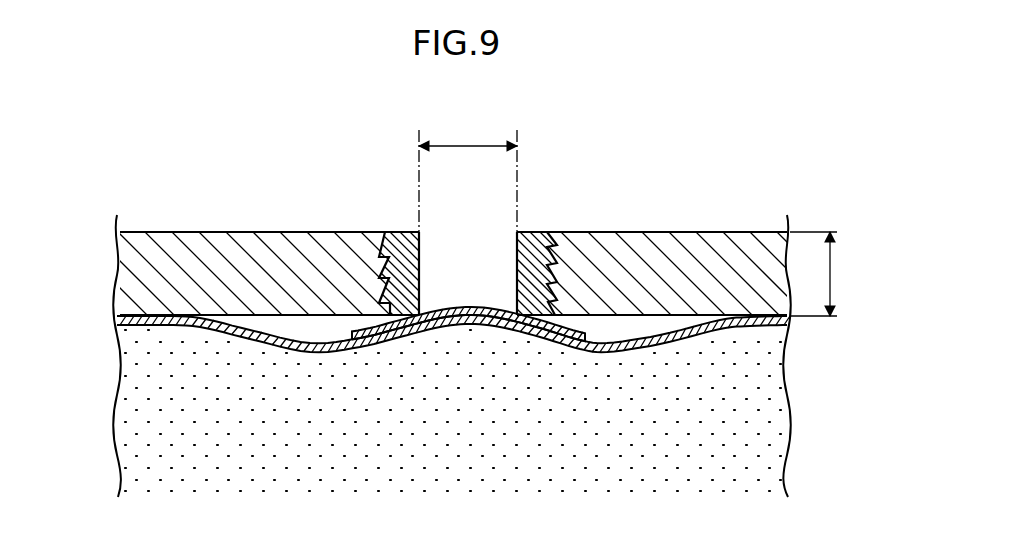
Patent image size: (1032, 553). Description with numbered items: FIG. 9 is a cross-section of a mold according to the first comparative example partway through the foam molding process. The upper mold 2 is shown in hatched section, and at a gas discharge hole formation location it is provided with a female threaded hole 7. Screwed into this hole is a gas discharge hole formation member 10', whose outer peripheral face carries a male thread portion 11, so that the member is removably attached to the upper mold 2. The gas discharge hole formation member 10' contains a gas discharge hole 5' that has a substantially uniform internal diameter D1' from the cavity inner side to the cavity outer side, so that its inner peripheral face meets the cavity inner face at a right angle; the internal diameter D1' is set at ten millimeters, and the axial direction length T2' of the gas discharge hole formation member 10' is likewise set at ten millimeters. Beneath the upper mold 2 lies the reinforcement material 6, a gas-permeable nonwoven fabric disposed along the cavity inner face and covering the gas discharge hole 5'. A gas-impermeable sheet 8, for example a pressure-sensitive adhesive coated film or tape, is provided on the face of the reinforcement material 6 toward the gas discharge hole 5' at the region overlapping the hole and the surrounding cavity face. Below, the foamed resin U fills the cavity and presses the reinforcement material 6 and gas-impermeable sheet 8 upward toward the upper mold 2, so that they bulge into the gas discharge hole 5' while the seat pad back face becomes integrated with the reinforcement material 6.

The upper mold 2 is at (727, 232).
The gas discharge hole 5' is at (468, 245).
The reinforcement material 6 is at (747, 330).
The female threaded hole 7 is at (522, 232).
The gas-impermeable sheet 8 is at (585, 328).
The gas discharge hole formation member 10' is at (396, 236).
The male thread portion 11 is at (378, 262).
The foamed resin U is at (134, 386).
The internal diameter D1' is at (468, 158).
The axial direction length T2' is at (838, 274).